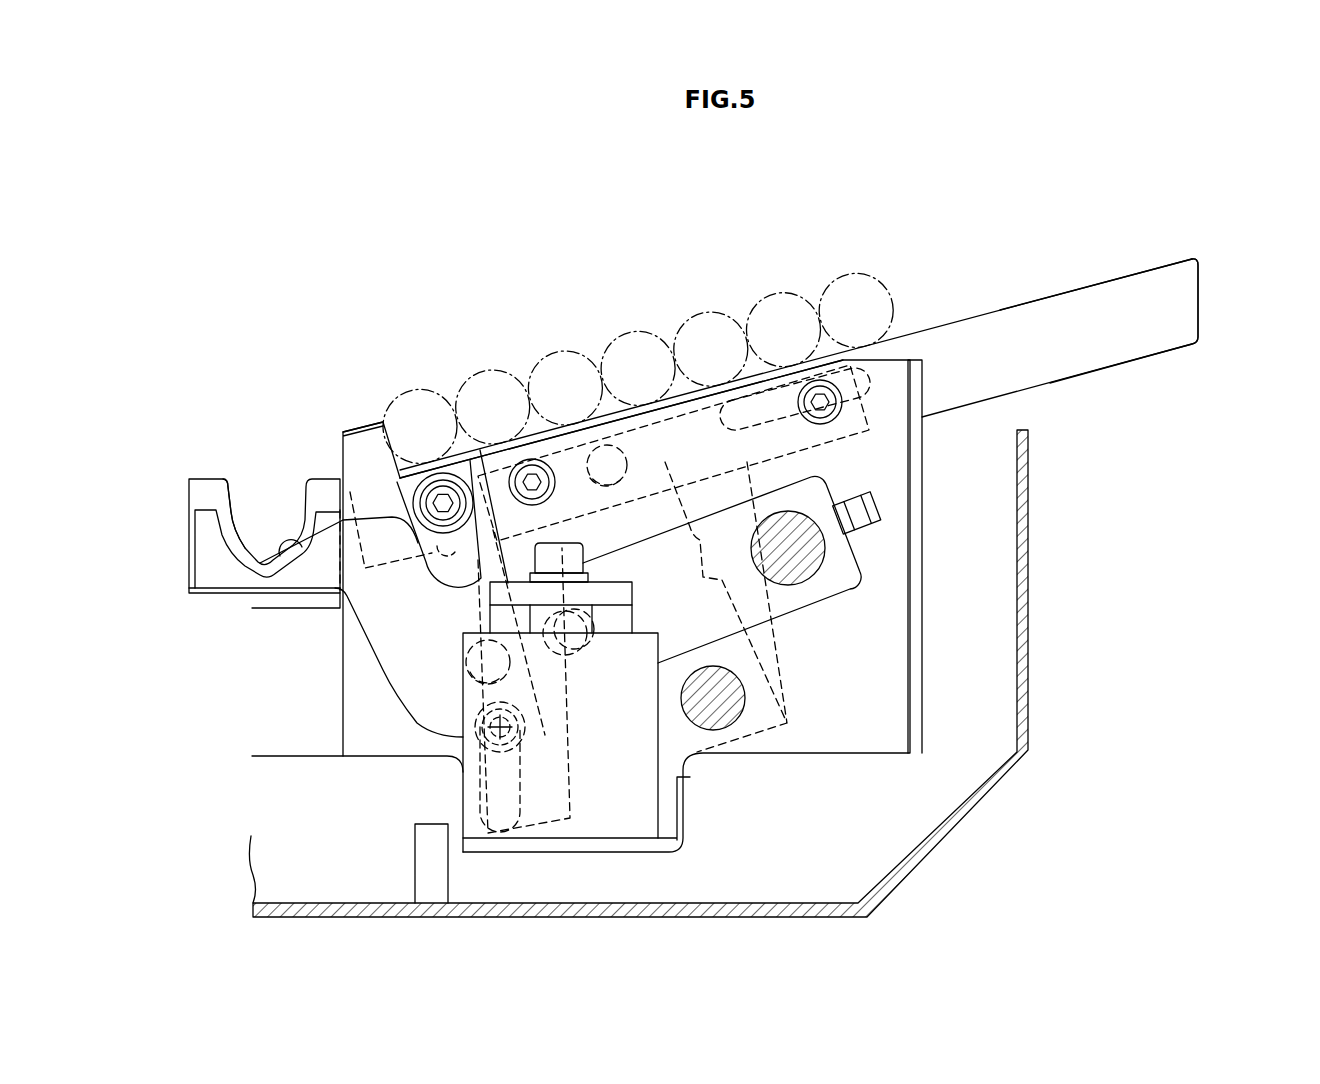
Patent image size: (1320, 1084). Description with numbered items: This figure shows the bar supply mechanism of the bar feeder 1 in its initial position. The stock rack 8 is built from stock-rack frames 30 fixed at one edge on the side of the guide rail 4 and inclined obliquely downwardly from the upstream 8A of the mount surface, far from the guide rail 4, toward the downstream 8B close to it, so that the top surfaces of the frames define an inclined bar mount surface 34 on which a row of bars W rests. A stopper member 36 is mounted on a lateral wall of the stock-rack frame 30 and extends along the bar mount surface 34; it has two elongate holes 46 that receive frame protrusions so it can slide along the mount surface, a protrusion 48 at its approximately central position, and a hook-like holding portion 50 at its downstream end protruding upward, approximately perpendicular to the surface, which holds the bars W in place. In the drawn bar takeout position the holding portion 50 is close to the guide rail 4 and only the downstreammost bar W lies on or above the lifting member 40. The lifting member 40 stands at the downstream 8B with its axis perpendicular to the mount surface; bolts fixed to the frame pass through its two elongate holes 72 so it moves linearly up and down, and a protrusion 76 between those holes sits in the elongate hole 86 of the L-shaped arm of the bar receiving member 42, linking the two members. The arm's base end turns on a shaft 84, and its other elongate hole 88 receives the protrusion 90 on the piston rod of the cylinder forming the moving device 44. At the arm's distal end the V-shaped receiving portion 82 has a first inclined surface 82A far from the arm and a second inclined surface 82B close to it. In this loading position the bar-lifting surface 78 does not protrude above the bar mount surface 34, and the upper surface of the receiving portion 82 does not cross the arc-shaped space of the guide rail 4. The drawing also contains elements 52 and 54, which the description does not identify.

The bar feeder 1 is at (905, 220).
The guide rail 4 is at (188, 490).
The stock rack 8 is at (1200, 300).
The upstream of the mount surface 8A is at (1168, 263).
The downstream of the mount surface 8B is at (356, 418).
The stock-rack frame 30 is at (1118, 337).
The bar mount surface 34 is at (980, 315).
The stopper member 36 is at (700, 447).
The lifting member 40 is at (557, 817).
The bar receiving member 42 is at (427, 703).
The moving device 44 is at (616, 806).
The elongate holes 46 is at (485, 475).
The protrusion 48 is at (600, 452).
The hook-like holding portion 50 is at (357, 460).
The lower shaft 52 is at (722, 712).
The support plate 54 is at (722, 680).
The elongate holes 72 is at (445, 550).
The protrusion 76 is at (475, 712).
The bar-lifting surface 78 is at (438, 473).
The receiving portion 82 is at (223, 577).
The first inclined surface 82A is at (233, 540).
The second inclined surface 82B is at (300, 550).
The shaft 84 is at (792, 560).
The elongate hole 86 is at (463, 660).
The elongate hole 88 is at (596, 612).
The protrusion 90 is at (525, 727).
The bar W is at (858, 270).